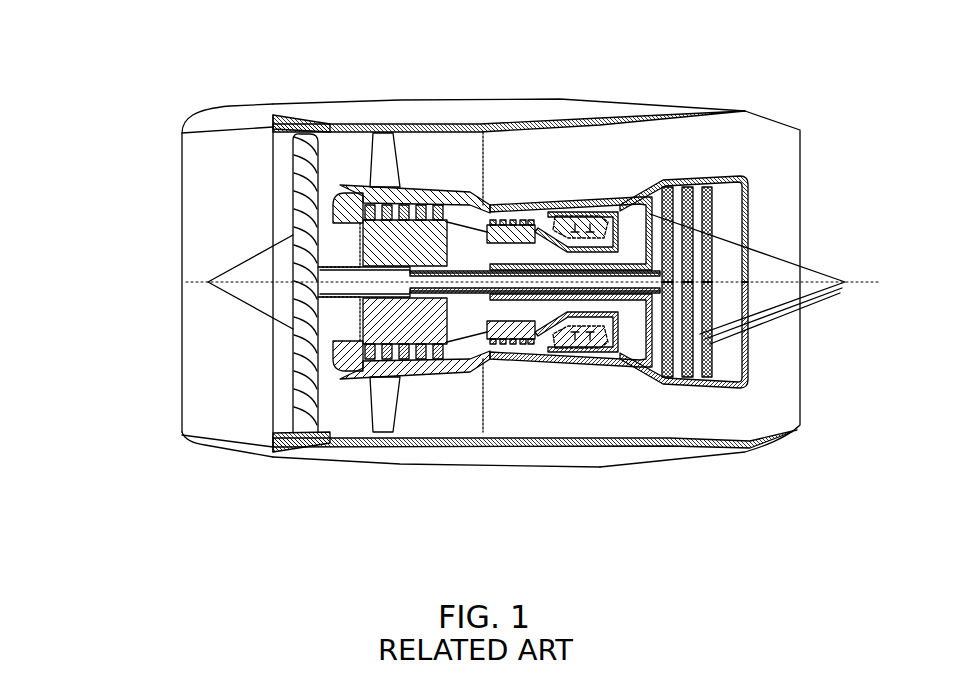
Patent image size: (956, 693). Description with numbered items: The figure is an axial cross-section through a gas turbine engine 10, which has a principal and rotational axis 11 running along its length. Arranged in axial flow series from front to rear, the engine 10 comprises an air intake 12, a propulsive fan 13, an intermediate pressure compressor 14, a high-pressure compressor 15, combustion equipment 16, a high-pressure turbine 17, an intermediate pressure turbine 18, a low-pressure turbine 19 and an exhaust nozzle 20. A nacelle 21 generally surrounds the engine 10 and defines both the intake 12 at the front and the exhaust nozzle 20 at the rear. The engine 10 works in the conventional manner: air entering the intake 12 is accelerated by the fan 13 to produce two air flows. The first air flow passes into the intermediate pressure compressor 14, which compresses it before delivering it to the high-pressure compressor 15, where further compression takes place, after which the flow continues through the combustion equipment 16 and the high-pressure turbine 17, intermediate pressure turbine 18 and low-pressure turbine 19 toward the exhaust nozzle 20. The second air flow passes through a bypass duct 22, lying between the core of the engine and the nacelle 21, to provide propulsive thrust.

The gas turbine engine 10 is at (160, 167).
The principal and rotational axis 11 is at (173, 282).
The air intake 12 is at (240, 129).
The propulsive fan 13 is at (293, 402).
The intermediate pressure compressor 14 is at (403, 352).
The high-pressure compressor 15 is at (505, 227).
The combustion equipment 16 is at (570, 340).
The high-pressure turbine 17 is at (613, 343).
The intermediate pressure turbine 18 is at (647, 207).
The low-pressure turbine 19 is at (665, 367).
The exhaust nozzle 20 is at (800, 423).
The nacelle 21 is at (608, 95).
The bypass duct 22 is at (463, 174).